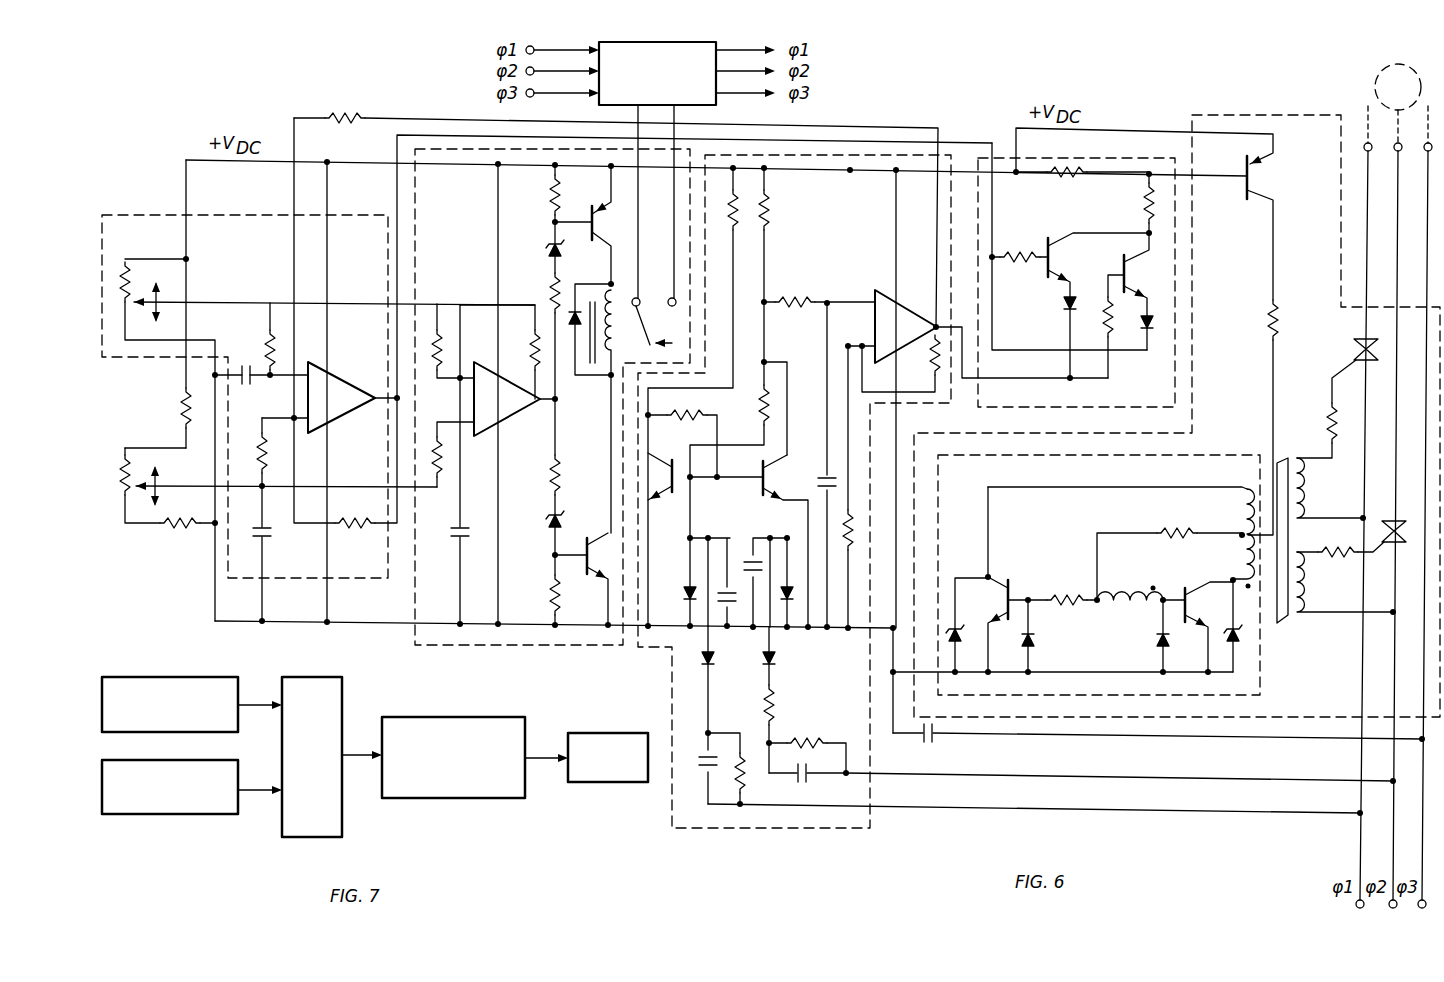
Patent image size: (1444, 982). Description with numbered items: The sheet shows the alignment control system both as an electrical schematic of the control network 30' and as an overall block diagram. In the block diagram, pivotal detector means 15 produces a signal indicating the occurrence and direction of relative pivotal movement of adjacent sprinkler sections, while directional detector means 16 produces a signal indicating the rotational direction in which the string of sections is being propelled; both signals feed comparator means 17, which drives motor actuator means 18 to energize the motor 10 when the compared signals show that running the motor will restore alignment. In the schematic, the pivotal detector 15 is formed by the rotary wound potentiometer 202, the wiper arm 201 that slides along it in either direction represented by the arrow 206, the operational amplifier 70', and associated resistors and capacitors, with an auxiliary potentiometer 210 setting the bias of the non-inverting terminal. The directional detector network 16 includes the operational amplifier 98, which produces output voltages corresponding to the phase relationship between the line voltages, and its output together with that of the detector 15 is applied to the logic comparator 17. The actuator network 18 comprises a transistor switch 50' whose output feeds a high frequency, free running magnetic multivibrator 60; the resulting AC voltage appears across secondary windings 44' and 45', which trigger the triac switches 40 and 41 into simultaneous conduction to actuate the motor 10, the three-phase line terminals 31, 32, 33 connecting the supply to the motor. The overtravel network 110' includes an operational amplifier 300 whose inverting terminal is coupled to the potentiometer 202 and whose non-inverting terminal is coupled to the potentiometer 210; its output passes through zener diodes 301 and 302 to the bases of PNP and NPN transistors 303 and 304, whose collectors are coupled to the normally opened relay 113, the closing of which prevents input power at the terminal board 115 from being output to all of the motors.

In FIG. 6, the motor 10 is at (1382, 84).
In FIG. 7, the motor 10 is at (626, 730).
In FIG. 6, the pivotal detector means 15 is at (219, 228).
In FIG. 7, the pivotal detector means 15 is at (196, 676).
In FIG. 6, the directional detector means 16 is at (810, 188).
In FIG. 7, the directional detector means 16 is at (228, 816).
In FIG. 6, the comparator means 17 is at (1100, 186).
In FIG. 7, the comparator means 17 is at (342, 692).
In FIG. 6, the motor actuator means 18 is at (1300, 132).
In FIG. 7, the motor actuator means 18 is at (470, 716).
In FIG. 6, the control network 30' is at (961, 70).
In FIG. 6, the phase 1 terminal 31 is at (1356, 908).
In FIG. 6, the phase 2 terminal 32 is at (1390, 908).
In FIG. 6, the phase 3 terminal 33 is at (1426, 908).
In FIG. 6, the triac switch 40 is at (1352, 344).
In FIG. 6, the triac switch 41 is at (1388, 520).
In FIG. 6, the secondary winding 44' is at (1322, 467).
In FIG. 6, the secondary winding 45' is at (1346, 606).
In FIG. 6, the transistor switch 50' is at (1283, 228).
In FIG. 6, the magnetic multivibrator 60 is at (1183, 462).
In FIG. 6, the operational amplifier 70' is at (352, 397).
In FIG. 6, the operational amplifier 98 is at (906, 333).
In FIG. 6, the overtravel network 110' is at (544, 360).
In FIG. 6, the normally opened relay 113 is at (622, 280).
In FIG. 6, the terminal board 115 is at (675, 84).
In FIG. 6, the wiper arm 201 is at (168, 300).
In FIG. 6, the rotary wound potentiometer 202 is at (112, 288).
In FIG. 6, the arrow 206 is at (168, 306).
In FIG. 6, the auxiliary potentiometer 210 is at (112, 476).
In FIG. 6, the operational amplifier 300 is at (514, 405).
In FIG. 6, the zener diode 301 is at (546, 252).
In FIG. 6, the zener diode 302 is at (546, 526).
In FIG. 6, the PNP transistor 303 is at (594, 210).
In FIG. 6, the NPN transistor 304 is at (596, 576).